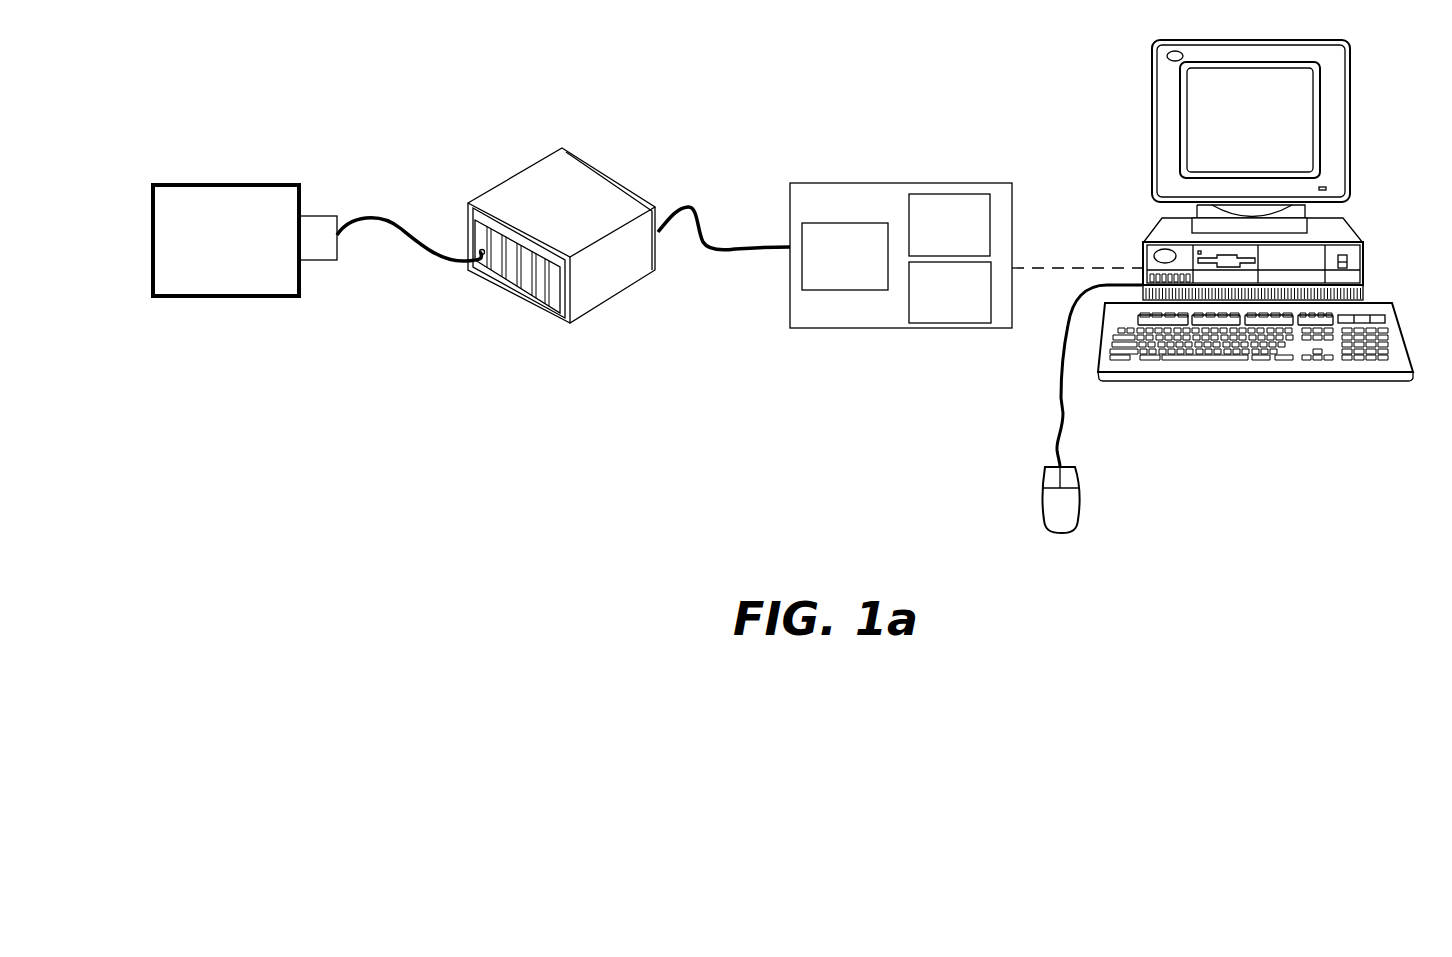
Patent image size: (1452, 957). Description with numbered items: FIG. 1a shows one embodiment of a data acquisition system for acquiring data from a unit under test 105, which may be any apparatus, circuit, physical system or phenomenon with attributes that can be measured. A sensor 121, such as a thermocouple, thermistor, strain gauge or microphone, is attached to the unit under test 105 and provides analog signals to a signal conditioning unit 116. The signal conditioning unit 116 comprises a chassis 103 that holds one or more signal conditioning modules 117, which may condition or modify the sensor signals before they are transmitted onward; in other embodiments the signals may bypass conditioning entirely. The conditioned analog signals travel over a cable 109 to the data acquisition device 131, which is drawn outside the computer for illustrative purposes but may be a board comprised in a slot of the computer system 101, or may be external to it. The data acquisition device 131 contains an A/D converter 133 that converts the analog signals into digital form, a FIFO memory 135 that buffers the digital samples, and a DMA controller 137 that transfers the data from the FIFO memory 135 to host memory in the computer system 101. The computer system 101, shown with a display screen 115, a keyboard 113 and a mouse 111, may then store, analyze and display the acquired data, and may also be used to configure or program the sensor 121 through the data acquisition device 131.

The computer system 101 is at (1337, 232).
The chassis 103 is at (575, 320).
The unit under test 105 is at (226, 240).
The cable 109 is at (698, 212).
The mouse 111 is at (1065, 513).
The keyboard 113 is at (1345, 368).
The display screen 115 is at (1345, 93).
The signal conditioning unit 116 is at (598, 138).
The signal conditioning modules 117 is at (482, 260).
The sensor 121 is at (315, 248).
The data acquisition device 131 is at (901, 255).
The A/D converter 133 is at (828, 233).
The FIFO memory 135 is at (934, 200).
The DMA controller 137 is at (943, 318).